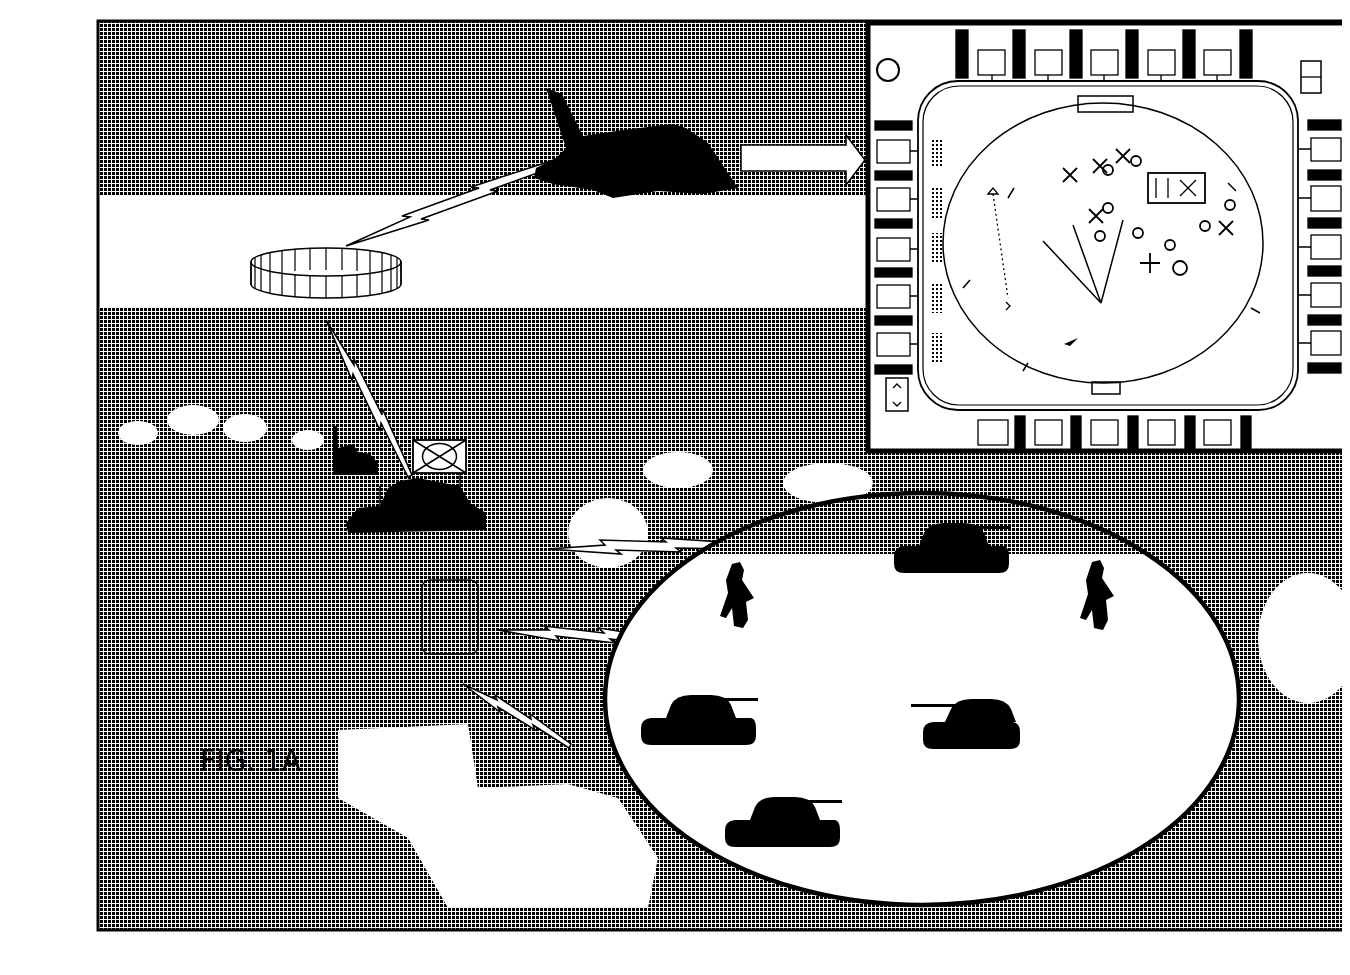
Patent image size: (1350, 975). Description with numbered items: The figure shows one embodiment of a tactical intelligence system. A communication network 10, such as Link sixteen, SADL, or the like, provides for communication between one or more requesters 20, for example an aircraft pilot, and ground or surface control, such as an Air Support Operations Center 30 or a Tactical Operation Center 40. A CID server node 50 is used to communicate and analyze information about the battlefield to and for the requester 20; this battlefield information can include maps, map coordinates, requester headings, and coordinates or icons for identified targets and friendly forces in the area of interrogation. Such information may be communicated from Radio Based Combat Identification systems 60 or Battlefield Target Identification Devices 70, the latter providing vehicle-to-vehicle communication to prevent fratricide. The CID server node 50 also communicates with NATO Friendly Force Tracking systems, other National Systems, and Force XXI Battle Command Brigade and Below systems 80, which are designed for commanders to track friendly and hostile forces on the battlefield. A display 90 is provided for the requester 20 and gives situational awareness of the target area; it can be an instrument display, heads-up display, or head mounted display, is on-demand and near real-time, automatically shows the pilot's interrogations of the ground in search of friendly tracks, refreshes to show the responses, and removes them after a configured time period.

The communication network 10 is at (319, 312).
The requester 20 is at (636, 136).
The Air Support Operations Center (ASOC) 30 is at (383, 479).
The Tactical Operation Center (TOC) 40 is at (442, 441).
The CID server node 50 is at (424, 617).
The Radio Based Combat Identification (RCBI) system 60 is at (903, 548).
The Battlefield Target Identification Device (BTID) 70 is at (699, 699).
The friendly force tracking systems 80 is at (905, 696).
The display 90 is at (1041, 237).